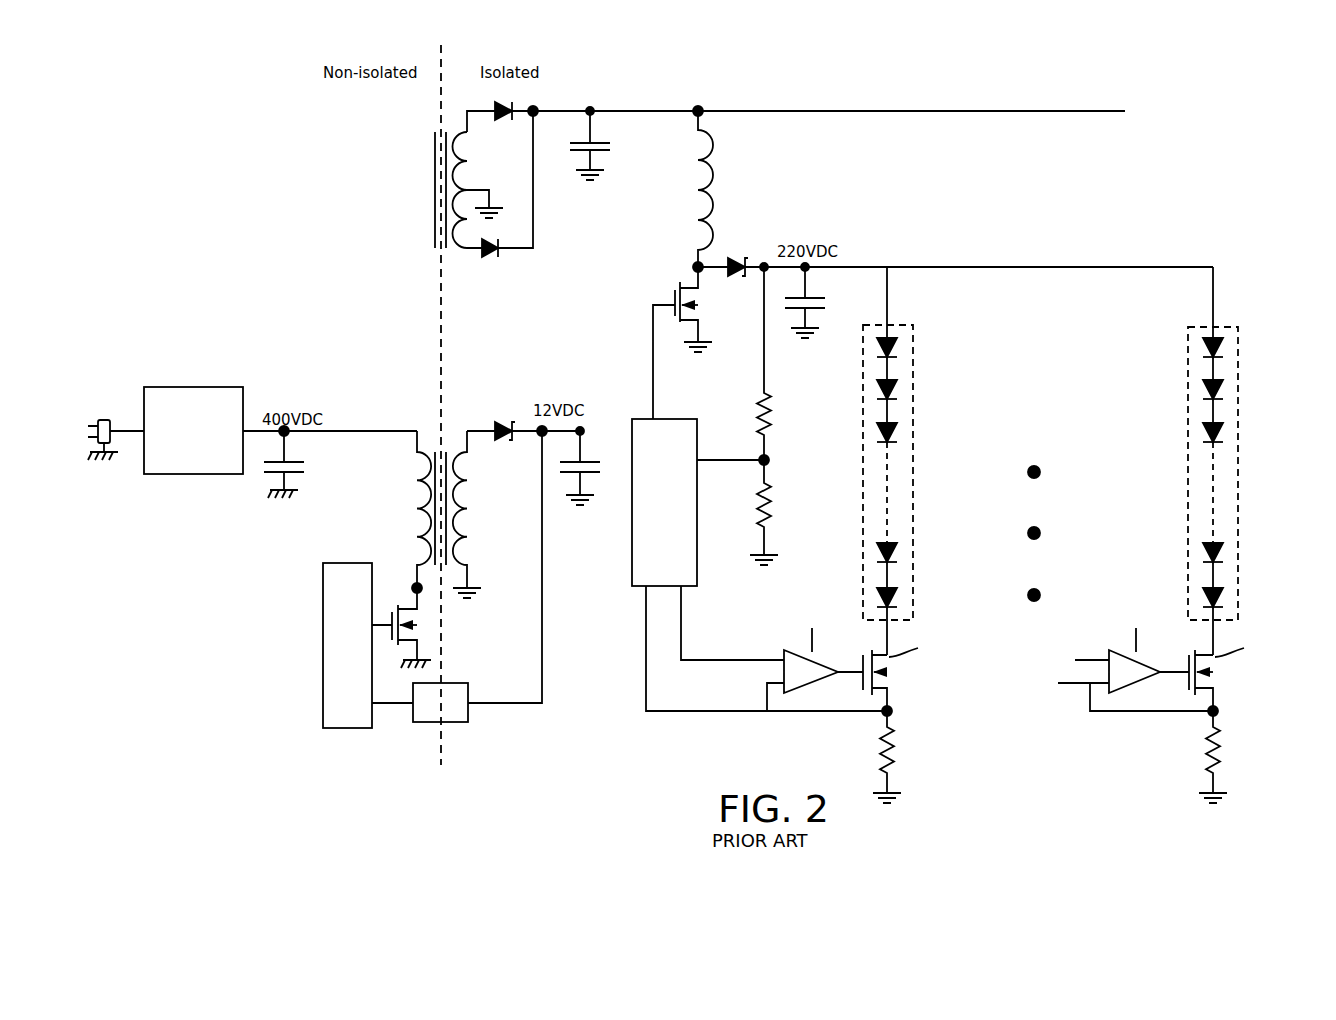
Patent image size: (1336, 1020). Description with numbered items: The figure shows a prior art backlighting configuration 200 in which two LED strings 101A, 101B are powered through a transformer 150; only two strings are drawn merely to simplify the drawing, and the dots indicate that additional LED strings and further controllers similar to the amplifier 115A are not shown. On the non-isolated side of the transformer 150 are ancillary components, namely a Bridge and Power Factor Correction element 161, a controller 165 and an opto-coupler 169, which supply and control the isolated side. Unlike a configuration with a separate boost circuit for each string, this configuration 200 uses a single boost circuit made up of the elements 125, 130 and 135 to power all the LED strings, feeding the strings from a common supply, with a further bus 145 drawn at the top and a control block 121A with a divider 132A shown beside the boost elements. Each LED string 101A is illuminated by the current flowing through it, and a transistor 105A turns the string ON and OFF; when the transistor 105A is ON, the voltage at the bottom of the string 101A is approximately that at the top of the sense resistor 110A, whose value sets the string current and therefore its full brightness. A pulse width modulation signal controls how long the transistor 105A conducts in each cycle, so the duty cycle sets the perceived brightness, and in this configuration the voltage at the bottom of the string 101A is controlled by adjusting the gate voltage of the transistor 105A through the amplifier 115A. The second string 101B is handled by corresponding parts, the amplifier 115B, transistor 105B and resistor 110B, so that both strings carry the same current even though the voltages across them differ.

The backlighting configuration 200 is at (829, 78).
The 115 VDC bus 145 is at (1069, 111).
The Bridge and Power Factor Correction element 161 is at (172, 387).
The transformer 150 is at (405, 275).
The controller 165 is at (377, 645).
The opto-coupler 169 is at (452, 722).
The boost circuit element 135 is at (716, 174).
The boost circuit element 130 is at (735, 257).
The boost circuit element 125 is at (667, 277).
The LED driver controller 121A is at (759, 565).
The voltage divider 132A is at (785, 392).
The LED string 101A is at (913, 578).
The LED string 101B is at (1238, 578).
The amplifier 115A is at (803, 687).
The PWM amplifier 115B is at (1127, 687).
The transistor 105A is at (905, 673).
The current control transistor 105B is at (1230, 673).
The sense resistor 110A is at (905, 748).
The current sense resistor 110B is at (1230, 748).